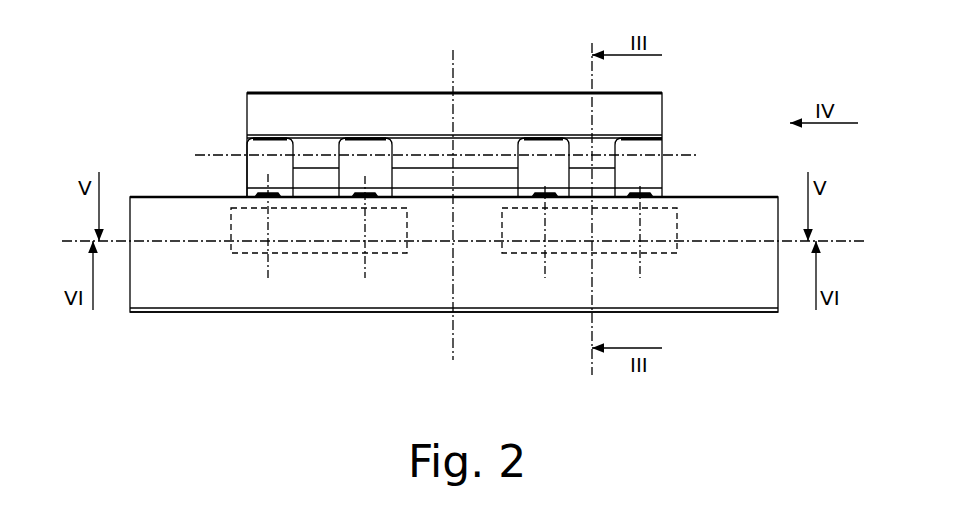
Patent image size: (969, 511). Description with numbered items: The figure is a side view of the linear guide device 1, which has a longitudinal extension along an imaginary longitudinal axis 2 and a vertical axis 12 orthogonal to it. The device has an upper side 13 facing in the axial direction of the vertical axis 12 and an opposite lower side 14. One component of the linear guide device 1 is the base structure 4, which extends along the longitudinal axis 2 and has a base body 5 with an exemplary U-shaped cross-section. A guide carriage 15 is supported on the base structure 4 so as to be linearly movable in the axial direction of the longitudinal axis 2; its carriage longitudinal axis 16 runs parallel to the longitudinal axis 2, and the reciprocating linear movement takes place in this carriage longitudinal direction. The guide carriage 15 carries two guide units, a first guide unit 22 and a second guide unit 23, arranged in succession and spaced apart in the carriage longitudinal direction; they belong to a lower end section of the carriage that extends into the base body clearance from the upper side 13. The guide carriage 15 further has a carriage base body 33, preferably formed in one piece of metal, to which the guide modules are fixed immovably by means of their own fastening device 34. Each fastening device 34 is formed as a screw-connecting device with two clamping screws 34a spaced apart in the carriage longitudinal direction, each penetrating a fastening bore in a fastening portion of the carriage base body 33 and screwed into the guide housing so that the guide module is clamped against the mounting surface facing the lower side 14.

The linear guide device 1 is at (732, 68).
The longitudinal axis 2 is at (97, 241).
The base structure 4 is at (735, 293).
The base body 5 is at (182, 292).
The vertical axis 12 is at (453, 70).
The upper side 13 is at (338, 92).
The lower side 14 is at (415, 312).
The guide carriage 15 is at (305, 112).
The carriage longitudinal axis 16 is at (690, 155).
The first guide unit 22 is at (295, 258).
The second guide unit 23 is at (570, 255).
The carriage base body 33 is at (428, 112).
The fastening device 34 is at (545, 190).
The clamping screws 34a is at (365, 181).